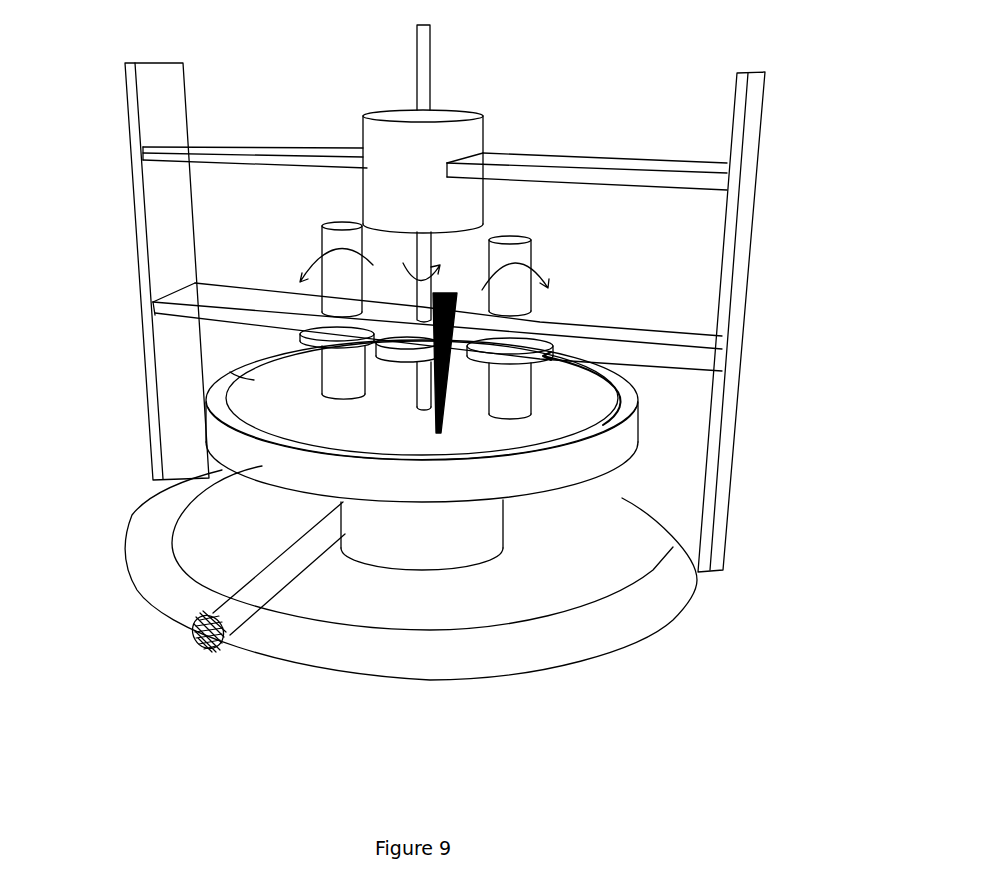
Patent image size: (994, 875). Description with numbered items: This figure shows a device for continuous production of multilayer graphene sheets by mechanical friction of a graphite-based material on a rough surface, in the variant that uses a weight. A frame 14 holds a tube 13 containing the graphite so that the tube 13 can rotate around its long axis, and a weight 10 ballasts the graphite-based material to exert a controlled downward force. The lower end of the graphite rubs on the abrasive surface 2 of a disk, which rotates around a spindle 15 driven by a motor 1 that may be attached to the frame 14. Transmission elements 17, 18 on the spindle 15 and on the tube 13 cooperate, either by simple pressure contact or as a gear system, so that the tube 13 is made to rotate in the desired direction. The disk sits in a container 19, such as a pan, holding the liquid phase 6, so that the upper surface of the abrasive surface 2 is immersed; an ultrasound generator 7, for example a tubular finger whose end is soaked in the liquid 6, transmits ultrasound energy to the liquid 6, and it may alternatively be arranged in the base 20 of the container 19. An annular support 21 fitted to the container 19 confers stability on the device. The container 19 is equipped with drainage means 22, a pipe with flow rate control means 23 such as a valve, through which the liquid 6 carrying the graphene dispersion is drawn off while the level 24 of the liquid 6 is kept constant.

The motor 1 is at (498, 136).
The abrasive surface 2 is at (295, 377).
The liquid phase 6 is at (276, 410).
The ultrasound generator 7 is at (471, 309).
The weight 10 is at (532, 238).
The tube containing graphite 13 is at (511, 409).
The frame 14 is at (117, 157).
The spindle 15 is at (432, 59).
The transmission element 17 is at (390, 378).
The transmission element 18 is at (556, 357).
The container 19 is at (550, 477).
The base 20 is at (592, 436).
The support 21 is at (673, 635).
The drainage means 22 is at (265, 599).
The flow rate control means 23 is at (175, 647).
The level of the liquid 24 is at (251, 372).